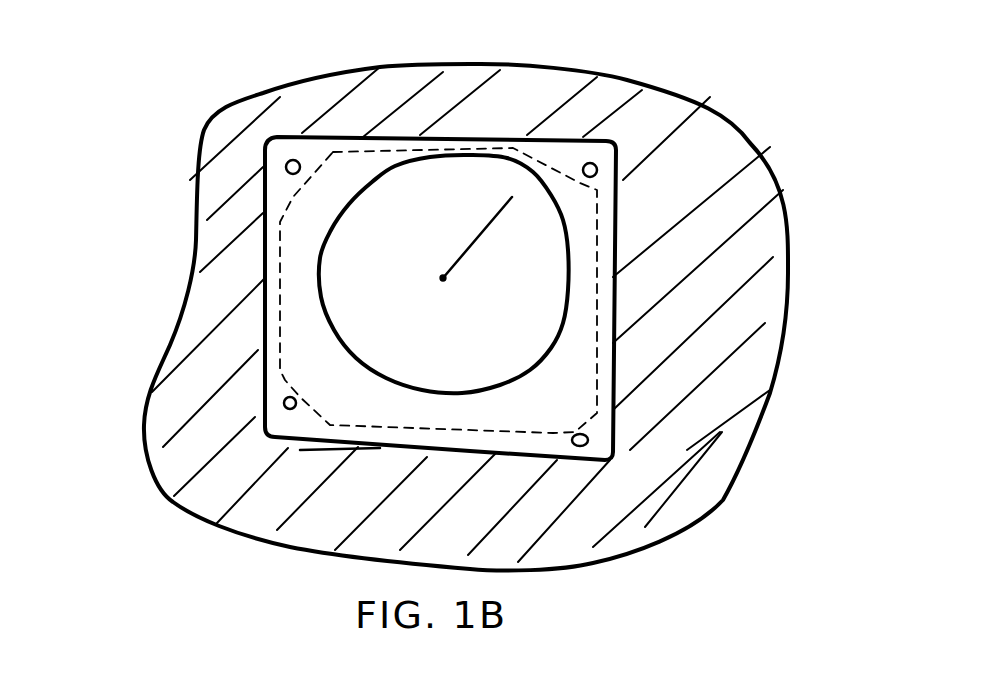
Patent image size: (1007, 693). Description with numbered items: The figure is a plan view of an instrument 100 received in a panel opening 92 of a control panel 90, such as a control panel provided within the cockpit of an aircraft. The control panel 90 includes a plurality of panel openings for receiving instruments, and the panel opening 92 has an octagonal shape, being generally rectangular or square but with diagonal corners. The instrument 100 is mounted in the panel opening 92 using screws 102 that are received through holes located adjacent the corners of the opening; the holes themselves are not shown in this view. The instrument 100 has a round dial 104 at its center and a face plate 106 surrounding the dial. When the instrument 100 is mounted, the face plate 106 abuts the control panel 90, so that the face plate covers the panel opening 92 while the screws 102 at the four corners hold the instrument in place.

The control panel 90 is at (665, 536).
The panel opening 92 is at (290, 290).
The instrument 100 is at (640, 308).
The screws 102 is at (283, 160).
The round dial 104 is at (567, 253).
The face plate 106 is at (380, 448).